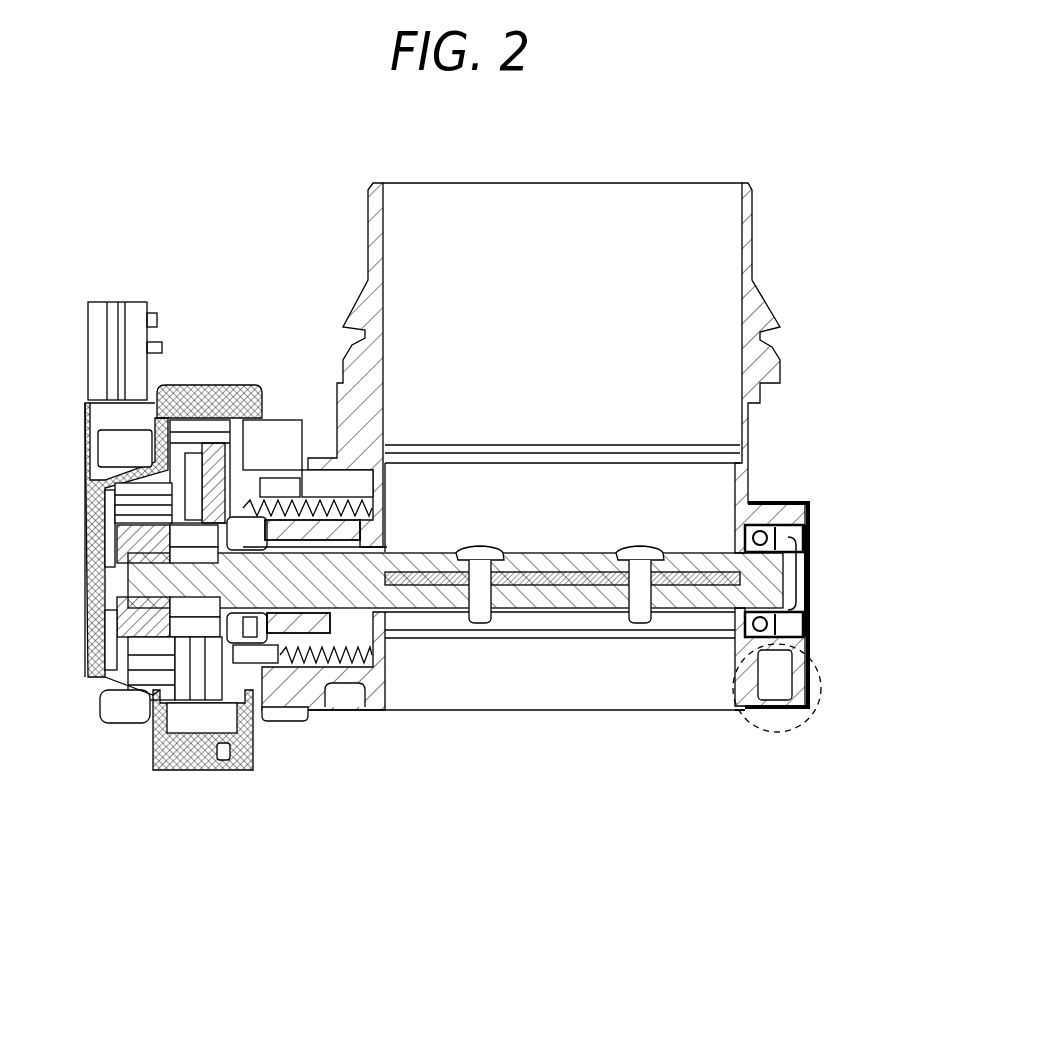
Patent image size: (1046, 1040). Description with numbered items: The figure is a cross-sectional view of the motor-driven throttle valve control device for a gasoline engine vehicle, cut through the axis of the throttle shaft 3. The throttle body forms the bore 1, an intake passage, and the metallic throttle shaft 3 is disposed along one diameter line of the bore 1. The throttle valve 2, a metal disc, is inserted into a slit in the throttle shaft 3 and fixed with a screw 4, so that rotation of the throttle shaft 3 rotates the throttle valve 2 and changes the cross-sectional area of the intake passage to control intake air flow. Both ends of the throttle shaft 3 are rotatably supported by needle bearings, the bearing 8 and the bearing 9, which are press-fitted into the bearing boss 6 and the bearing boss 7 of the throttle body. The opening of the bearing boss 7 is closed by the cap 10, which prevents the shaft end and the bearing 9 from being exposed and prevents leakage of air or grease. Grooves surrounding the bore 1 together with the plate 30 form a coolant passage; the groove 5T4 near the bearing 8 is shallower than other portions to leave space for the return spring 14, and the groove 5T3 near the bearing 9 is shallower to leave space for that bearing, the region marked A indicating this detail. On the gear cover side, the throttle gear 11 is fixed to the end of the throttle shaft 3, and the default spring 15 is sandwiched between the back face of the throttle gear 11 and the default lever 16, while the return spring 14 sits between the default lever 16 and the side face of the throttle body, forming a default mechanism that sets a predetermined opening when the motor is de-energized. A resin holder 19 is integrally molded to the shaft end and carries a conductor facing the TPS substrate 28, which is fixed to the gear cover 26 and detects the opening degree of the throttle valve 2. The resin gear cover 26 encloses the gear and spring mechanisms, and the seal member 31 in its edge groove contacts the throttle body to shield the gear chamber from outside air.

The bore 1 is at (748, 490).
The throttle valve 2 is at (573, 600).
The throttle shaft 3 is at (722, 600).
The screw 4 is at (470, 614).
The bearing boss 6 is at (385, 426).
The bearing boss 7 is at (812, 662).
The bearing 8 is at (320, 537).
The bearing 9 is at (776, 502).
The cap 10 is at (808, 545).
The throttle gear 11 is at (188, 384).
The return spring 14 is at (320, 673).
The default spring 15 is at (260, 717).
The default lever 16 is at (270, 665).
The resin holder 19 is at (92, 690).
The gear cover 26 is at (83, 553).
The TPS substrate 28 is at (85, 497).
The plate 30 is at (768, 715).
The seal member 31 is at (226, 384).
The groove 5T3 is at (808, 700).
The groove 5T4 is at (340, 717).
The region A is at (803, 720).